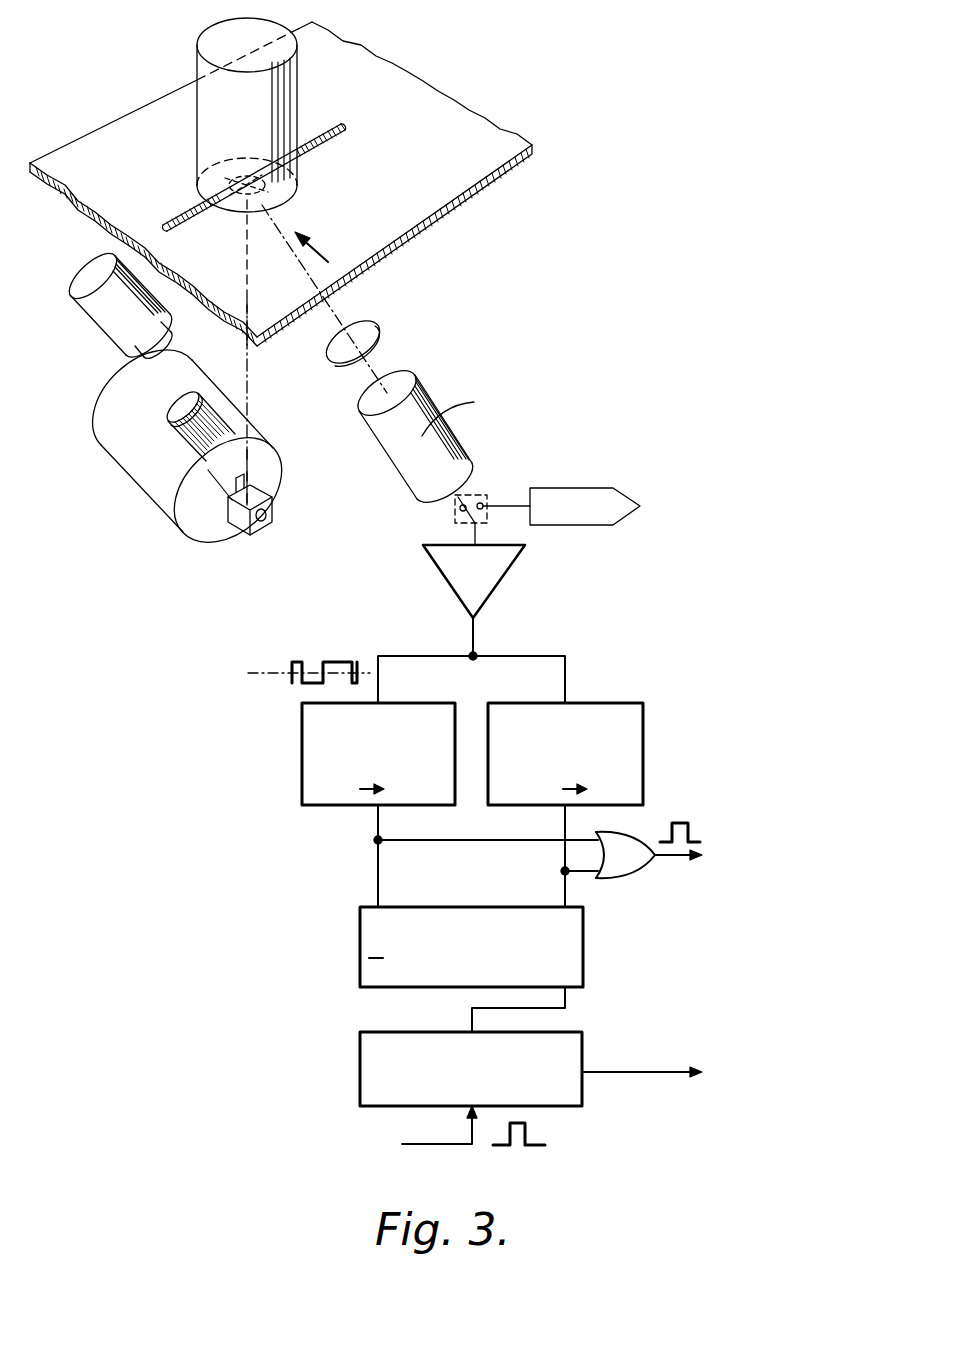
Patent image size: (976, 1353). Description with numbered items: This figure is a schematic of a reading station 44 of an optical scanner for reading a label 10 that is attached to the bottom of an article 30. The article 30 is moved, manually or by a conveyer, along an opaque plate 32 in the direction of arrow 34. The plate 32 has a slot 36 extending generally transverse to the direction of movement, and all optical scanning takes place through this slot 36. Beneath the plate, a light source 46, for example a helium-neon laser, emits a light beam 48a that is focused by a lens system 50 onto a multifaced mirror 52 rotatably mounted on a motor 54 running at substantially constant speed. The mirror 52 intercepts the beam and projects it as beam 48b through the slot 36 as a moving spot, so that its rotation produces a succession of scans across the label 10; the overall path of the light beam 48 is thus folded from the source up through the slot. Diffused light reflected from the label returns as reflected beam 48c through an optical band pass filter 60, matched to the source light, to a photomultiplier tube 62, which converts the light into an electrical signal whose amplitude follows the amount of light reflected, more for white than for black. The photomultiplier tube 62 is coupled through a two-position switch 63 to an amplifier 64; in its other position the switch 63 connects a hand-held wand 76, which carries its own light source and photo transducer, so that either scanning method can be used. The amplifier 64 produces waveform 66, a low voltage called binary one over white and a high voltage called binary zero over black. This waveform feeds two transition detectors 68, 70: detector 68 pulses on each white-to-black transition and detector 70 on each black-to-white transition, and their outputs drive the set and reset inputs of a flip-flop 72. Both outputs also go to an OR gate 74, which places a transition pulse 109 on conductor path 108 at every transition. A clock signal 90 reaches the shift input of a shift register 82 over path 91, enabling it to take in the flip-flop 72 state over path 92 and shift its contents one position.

The label 10 is at (245, 182).
The article 30 is at (198, 100).
The opaque plate 32 is at (98, 140).
The arrow 34 is at (320, 252).
The slot 36 is at (333, 125).
The reading station 44 is at (100, 401).
The light source 46 is at (100, 326).
The light beam 48 is at (247, 412).
The light beam 48a is at (200, 530).
The light beam 48b is at (246, 350).
The reflected beam 48c is at (330, 305).
The lens system 50 is at (168, 416).
The multifaced mirror 52 is at (272, 500).
The motor 54 is at (143, 483).
The optical band pass filter 60 is at (370, 325).
The photomultiplier tube 62 is at (423, 390).
The two-position switch 63 is at (455, 515).
The amplifier 64 is at (483, 594).
The waveform 66 is at (330, 660).
The transition detector 68 is at (643, 770).
The transition detector 70 is at (302, 762).
The flip-flop 72 is at (583, 945).
The OR gate 74 is at (625, 878).
The wand 76 is at (585, 492).
The shift register 82 is at (583, 1086).
The clock signal 90 is at (530, 1136).
The path 91 is at (455, 1148).
The path 92 is at (567, 1000).
The conductor path 108 is at (672, 862).
The transition pulse 109 is at (678, 821).